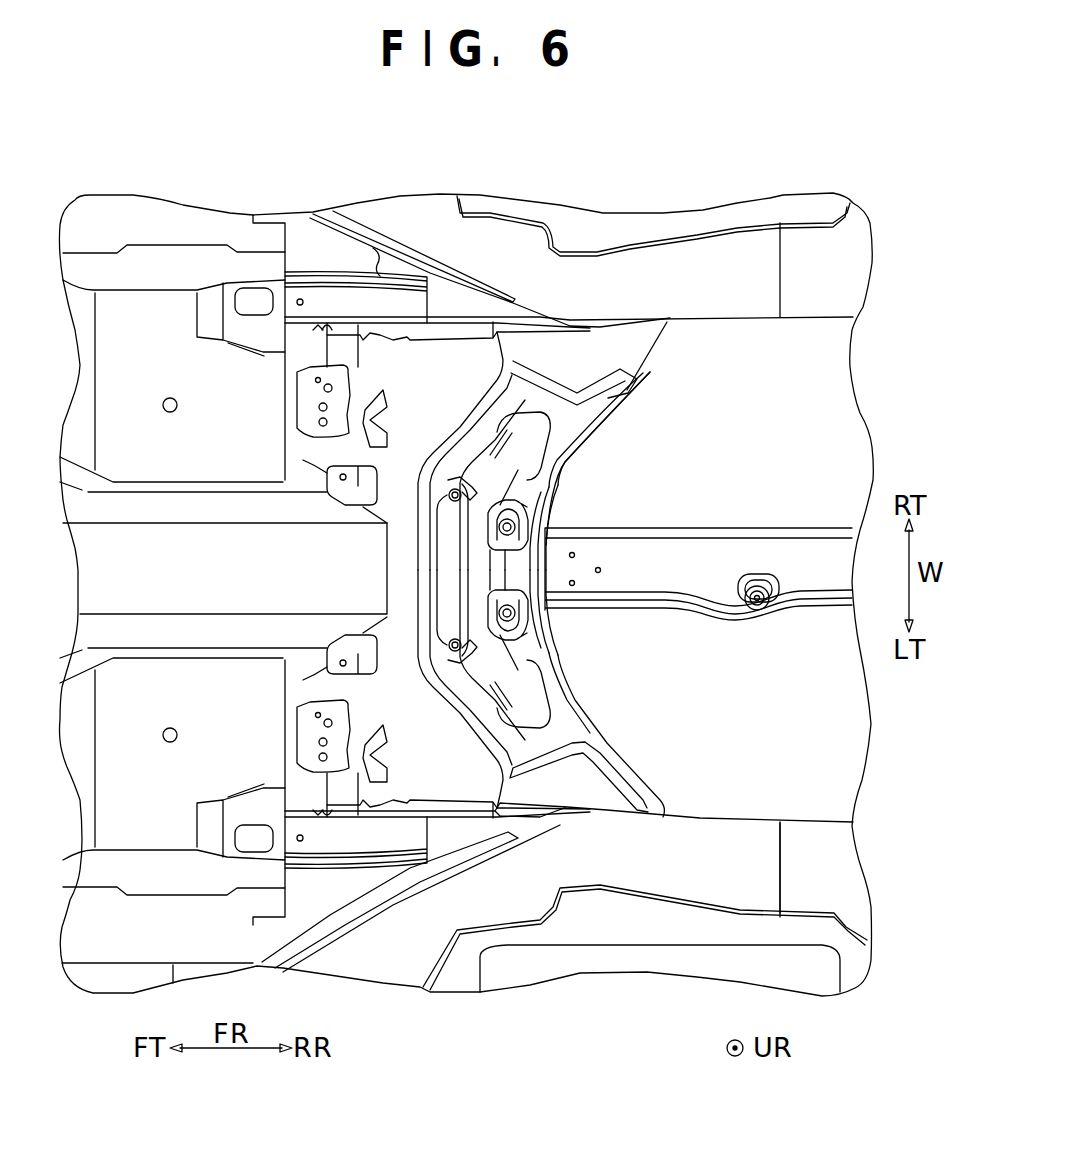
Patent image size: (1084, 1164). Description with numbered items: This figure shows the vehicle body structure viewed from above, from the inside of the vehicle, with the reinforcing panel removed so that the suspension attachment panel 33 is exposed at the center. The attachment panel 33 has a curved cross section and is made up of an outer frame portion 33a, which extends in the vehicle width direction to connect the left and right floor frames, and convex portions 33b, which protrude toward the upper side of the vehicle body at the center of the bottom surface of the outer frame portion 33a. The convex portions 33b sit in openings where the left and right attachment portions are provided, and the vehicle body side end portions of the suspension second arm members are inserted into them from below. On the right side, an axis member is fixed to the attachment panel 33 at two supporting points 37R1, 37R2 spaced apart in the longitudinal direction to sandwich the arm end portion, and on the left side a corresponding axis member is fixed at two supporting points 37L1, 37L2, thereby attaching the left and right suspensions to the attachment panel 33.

The suspension attachment panel 33 is at (673, 428).
The outer frame portion 33a is at (557, 462).
The convex portion 33b is at (537, 437).
The supporting point 37R1 is at (462, 488).
The supporting point 37R2 is at (513, 503).
The supporting point 37L1 is at (462, 652).
The supporting point 37L2 is at (513, 637).